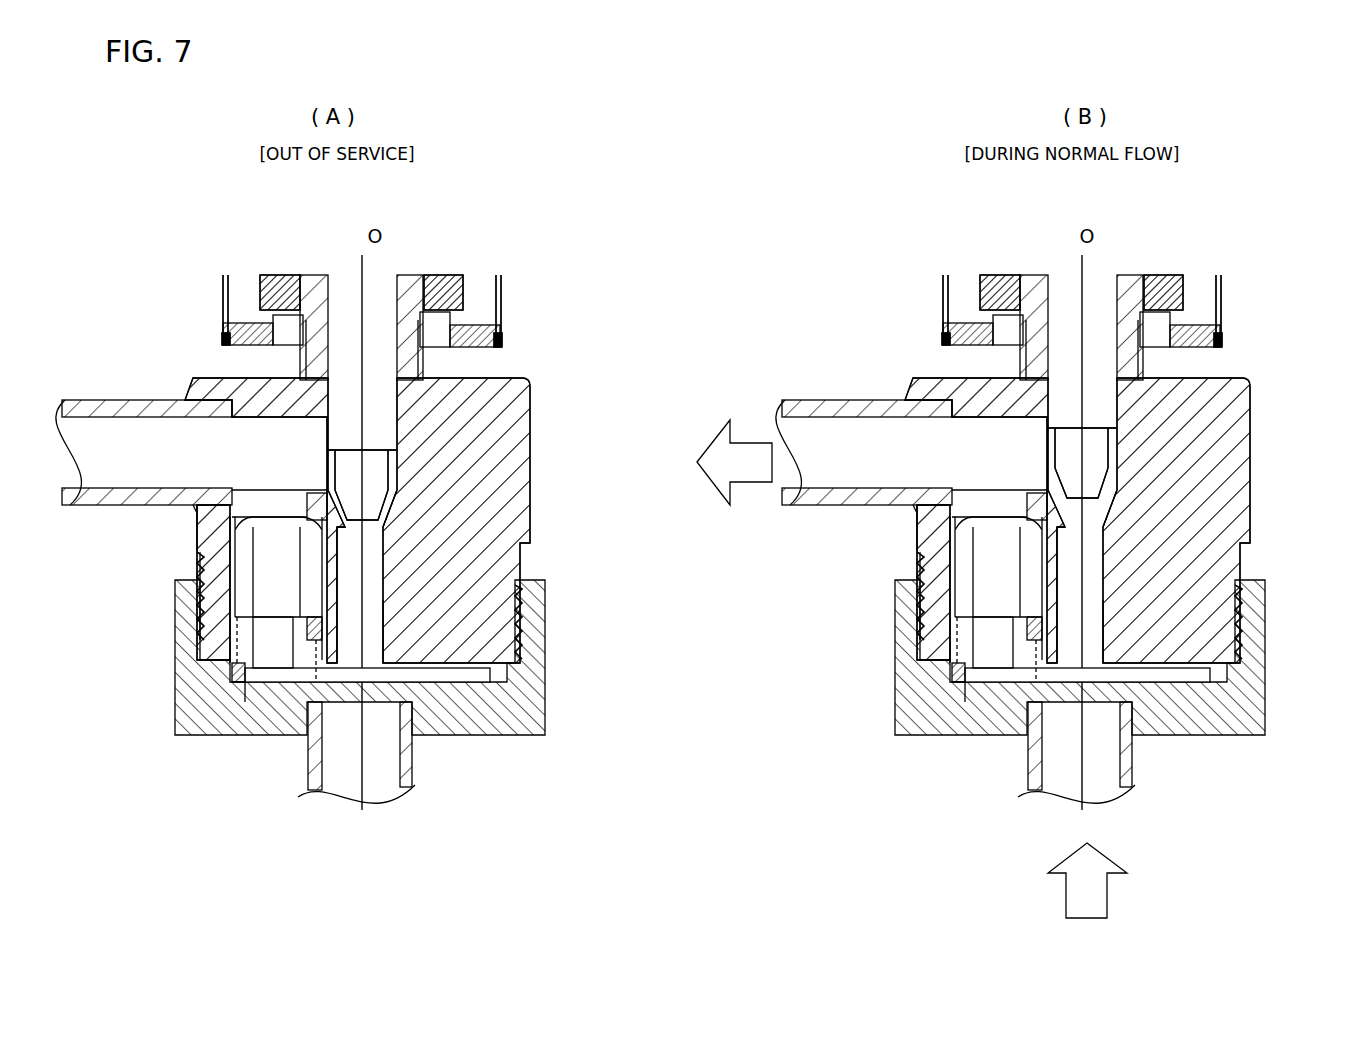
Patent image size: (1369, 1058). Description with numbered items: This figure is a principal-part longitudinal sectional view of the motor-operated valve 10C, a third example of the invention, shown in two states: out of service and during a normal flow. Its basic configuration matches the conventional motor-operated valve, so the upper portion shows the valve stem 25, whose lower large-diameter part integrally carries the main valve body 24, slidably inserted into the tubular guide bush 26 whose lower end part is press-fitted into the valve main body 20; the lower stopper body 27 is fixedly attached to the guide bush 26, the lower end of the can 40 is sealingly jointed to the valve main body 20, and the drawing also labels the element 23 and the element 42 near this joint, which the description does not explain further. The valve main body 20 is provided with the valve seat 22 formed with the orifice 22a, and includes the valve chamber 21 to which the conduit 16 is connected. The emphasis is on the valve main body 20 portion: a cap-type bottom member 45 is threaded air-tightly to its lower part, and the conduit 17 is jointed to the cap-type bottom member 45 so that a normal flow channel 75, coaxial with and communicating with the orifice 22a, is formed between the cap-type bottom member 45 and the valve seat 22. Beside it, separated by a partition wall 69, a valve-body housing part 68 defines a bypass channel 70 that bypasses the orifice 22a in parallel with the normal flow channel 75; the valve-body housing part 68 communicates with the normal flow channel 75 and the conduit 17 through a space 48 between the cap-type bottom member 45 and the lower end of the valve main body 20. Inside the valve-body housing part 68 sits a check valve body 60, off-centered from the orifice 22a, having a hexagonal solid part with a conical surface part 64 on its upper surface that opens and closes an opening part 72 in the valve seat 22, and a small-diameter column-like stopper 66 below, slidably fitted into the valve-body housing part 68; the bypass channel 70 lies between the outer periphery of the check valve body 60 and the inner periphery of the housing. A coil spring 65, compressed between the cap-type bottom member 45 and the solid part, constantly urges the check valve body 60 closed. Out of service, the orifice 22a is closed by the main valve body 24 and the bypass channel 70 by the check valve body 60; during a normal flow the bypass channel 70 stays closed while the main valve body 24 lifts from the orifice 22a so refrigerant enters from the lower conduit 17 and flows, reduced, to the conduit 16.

The motor-operated valve 10C is at (192, 254).
The conduit 16 is at (108, 400).
The conduit 17 is at (408, 748).
The valve main body 20 is at (531, 517).
The valve chamber 21 is at (397, 472).
The valve seat 22 is at (317, 492).
The orifice 22a is at (382, 507).
The seal ring 23 is at (493, 347).
The valve body 24 is at (370, 497).
The valve stem 25 is at (382, 422).
The guide bush 26 is at (405, 355).
The lower stopper body 27 is at (496, 318).
The can 40 is at (502, 283).
The gland 42 is at (262, 347).
The cap-type bottom member 45 is at (223, 735).
The space 48 is at (277, 682).
The check valve body 60 is at (247, 588).
The conical surface part 64 is at (197, 543).
The coil spring 65 is at (232, 686).
The column-like stopper 66 is at (237, 672).
The valve-body housing part 68 is at (207, 568).
The partition wall 69 is at (353, 558).
The bypass channel 70 is at (250, 643).
The opening part 72 is at (197, 513).
The normal flow channel 75 is at (370, 607).